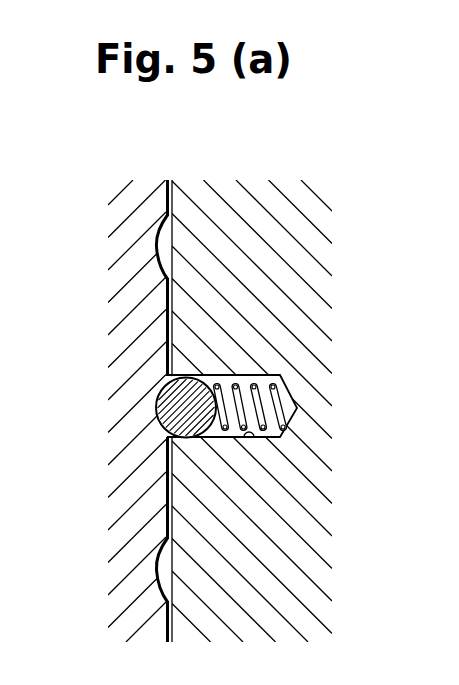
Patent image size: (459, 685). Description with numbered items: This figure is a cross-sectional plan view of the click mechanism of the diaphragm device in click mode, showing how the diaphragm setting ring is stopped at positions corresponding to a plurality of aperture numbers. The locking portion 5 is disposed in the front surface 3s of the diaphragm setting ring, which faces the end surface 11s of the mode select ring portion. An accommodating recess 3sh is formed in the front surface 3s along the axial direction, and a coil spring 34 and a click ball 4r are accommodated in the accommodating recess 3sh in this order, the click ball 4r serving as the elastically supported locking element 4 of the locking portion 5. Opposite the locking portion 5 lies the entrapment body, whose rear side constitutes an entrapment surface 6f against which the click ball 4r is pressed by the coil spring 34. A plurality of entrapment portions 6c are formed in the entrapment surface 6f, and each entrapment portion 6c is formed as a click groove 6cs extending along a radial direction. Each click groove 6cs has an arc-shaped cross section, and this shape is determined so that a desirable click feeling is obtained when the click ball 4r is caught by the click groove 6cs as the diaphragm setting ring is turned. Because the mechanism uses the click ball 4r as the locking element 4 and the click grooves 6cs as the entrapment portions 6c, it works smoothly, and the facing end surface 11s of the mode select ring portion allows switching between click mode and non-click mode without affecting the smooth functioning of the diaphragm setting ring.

The front surface of the diaphragm setting ring 3s is at (166, 203).
The end surface of the mode select ring portion 11s is at (168, 610).
The entrapment surface 6f is at (172, 313).
The entrapment portion 6c is at (223, 380).
The click groove 6cs is at (158, 248).
The locking portion 5 is at (295, 419).
The accommodating recess 3sh is at (258, 438).
The coil spring 34 is at (284, 402).
The locking element 4 is at (127, 380).
The click ball 4r is at (203, 379).